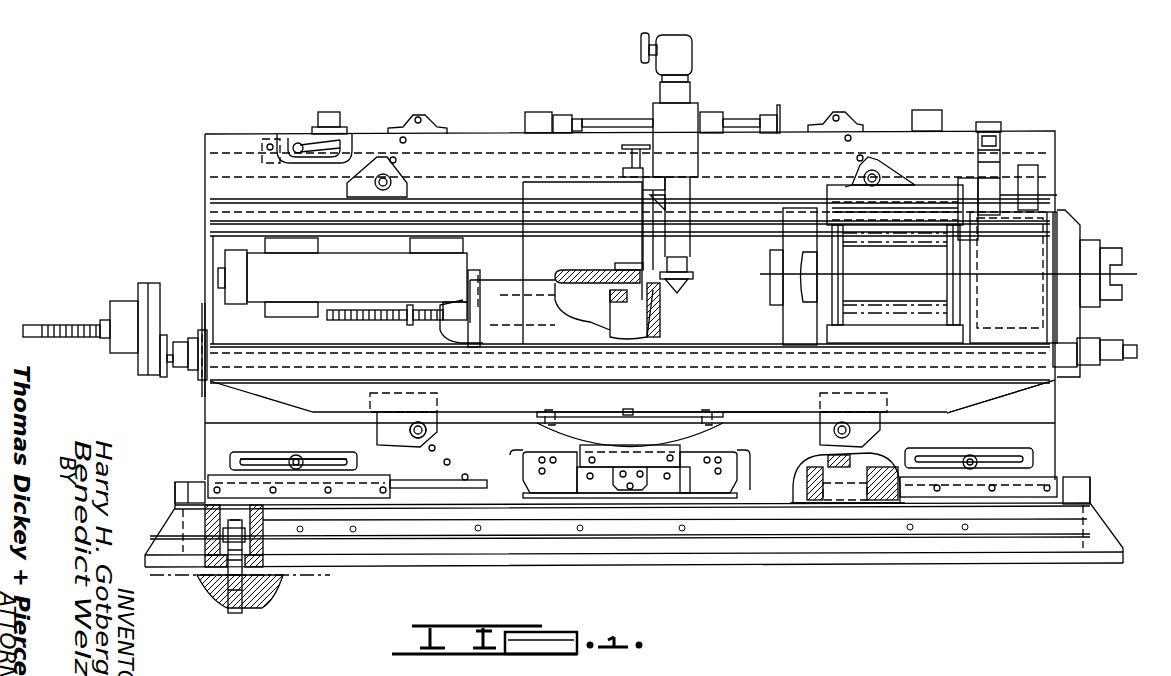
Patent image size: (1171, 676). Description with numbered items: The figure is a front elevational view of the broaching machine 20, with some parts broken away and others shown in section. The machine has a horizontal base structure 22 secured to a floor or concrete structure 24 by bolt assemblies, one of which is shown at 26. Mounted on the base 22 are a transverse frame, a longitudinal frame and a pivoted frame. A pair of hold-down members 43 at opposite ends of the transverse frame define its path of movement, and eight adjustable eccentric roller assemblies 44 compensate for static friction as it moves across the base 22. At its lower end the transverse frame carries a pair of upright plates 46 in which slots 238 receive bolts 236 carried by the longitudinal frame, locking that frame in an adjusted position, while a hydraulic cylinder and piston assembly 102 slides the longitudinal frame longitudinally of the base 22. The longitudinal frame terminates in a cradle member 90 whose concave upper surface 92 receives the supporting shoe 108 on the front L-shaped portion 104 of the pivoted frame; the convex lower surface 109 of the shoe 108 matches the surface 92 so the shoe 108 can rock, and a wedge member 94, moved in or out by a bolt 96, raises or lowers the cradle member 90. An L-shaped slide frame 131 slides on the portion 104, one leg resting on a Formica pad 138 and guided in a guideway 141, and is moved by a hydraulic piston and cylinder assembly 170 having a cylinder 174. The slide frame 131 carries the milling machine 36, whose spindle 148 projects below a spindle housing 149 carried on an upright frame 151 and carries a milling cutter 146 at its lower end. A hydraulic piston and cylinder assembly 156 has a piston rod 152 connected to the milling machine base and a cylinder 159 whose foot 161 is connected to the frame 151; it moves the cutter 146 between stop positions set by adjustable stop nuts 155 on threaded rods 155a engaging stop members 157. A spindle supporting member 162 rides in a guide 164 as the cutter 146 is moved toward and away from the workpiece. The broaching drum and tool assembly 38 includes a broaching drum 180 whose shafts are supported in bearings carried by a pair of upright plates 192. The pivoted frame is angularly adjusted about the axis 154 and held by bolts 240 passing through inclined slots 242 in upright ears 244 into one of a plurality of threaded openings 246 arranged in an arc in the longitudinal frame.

The broaching machine 20 is at (322, 80).
The horizontal base structure 22 is at (1013, 560).
The floor or concrete structure 24 is at (270, 584).
The bolt assembly 26 is at (240, 612).
The milling machine 36 is at (722, 247).
The broaching drum and tool assembly 38 is at (932, 272).
The hold-down members 43 is at (185, 482).
The adjustable eccentric roller assemblies 44 is at (840, 472).
The upright plates 46 is at (318, 476).
The cradle member 90 is at (658, 461).
The concave upper surface 92 is at (623, 446).
The wedge member 94 is at (580, 472).
The bolt 96 is at (630, 491).
The hydraulic cylinder and piston assembly 102 is at (190, 383).
The outer L-shaped portion 104 is at (740, 385).
The supporting shoe 108 is at (688, 428).
The convex lower surface 109 is at (585, 443).
The L-shaped slide frame 131 is at (614, 390).
The Formica pad 138 is at (690, 388).
The guideway 141 is at (962, 386).
The milling cutter 146 is at (697, 274).
The spindle 148 is at (706, 236).
The spindle housing 149 is at (681, 210).
The upright frame 151 is at (532, 215).
The piston rod 152 is at (480, 296).
The axis 154 is at (630, 270).
The adjustable stop nuts 155 is at (440, 303).
The threaded rods 155a is at (337, 318).
The hydraulic piston and cylinder assembly 156 is at (580, 303).
The stop members 157 is at (472, 325).
The cylinder 159 is at (600, 317).
The foot 161 is at (668, 303).
The spindle supporting member 162 is at (656, 224).
The guide 164 is at (647, 200).
The hydraulic piston and cylinder assembly 170 is at (250, 308).
The cylinder 174 is at (372, 274).
The broaching drum 180 is at (933, 256).
The upright plates 192 is at (826, 258).
The bolts 236 is at (296, 455).
The slots 238 is at (243, 463).
The bolts 240 is at (398, 180).
The inclined slots 242 is at (397, 162).
The upright ears 244 is at (417, 441).
The threaded openings 246 is at (452, 96).